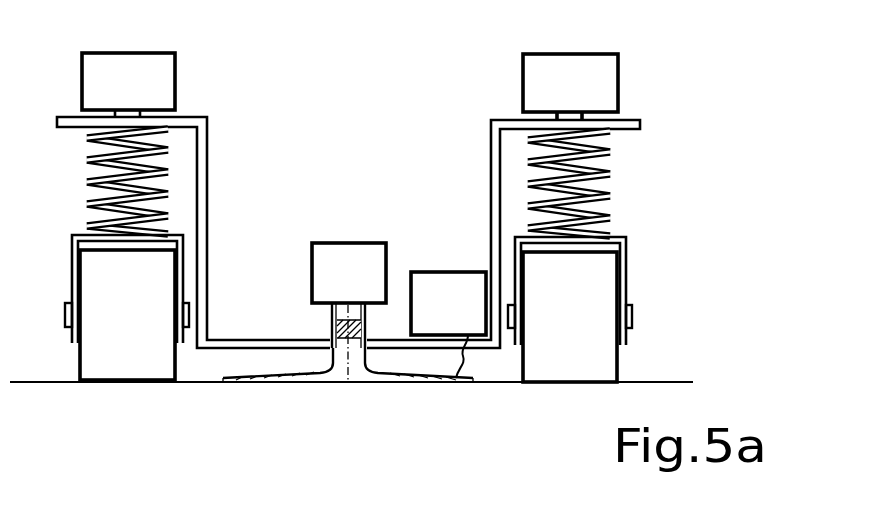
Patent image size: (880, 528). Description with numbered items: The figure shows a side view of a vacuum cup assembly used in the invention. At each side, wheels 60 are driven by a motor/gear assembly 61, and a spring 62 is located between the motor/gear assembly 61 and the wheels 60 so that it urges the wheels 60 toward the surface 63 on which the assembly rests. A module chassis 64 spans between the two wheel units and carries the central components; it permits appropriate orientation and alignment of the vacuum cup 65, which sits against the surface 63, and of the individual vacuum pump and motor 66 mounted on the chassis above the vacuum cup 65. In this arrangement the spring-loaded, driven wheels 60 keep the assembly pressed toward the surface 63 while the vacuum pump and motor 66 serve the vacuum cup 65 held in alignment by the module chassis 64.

The wheels 60 is at (593, 279).
The motor/gear assembly 61 is at (618, 72).
The spring 62 is at (610, 202).
The surface 63 is at (200, 382).
The module chassis 64 is at (207, 170).
The vacuum cup 65 is at (435, 382).
The vacuum pump and motor 66 is at (340, 243).